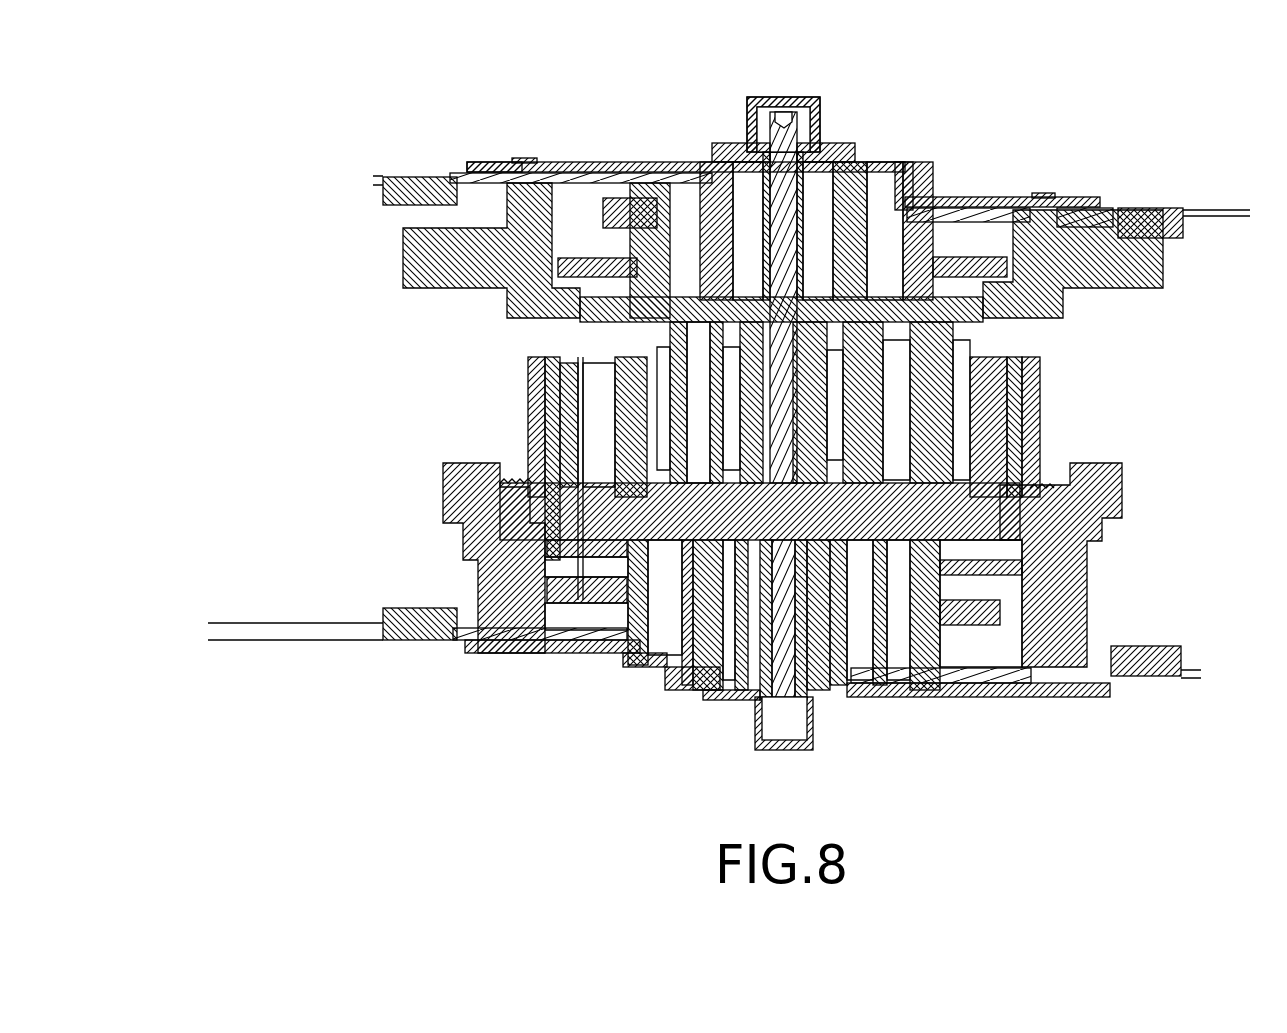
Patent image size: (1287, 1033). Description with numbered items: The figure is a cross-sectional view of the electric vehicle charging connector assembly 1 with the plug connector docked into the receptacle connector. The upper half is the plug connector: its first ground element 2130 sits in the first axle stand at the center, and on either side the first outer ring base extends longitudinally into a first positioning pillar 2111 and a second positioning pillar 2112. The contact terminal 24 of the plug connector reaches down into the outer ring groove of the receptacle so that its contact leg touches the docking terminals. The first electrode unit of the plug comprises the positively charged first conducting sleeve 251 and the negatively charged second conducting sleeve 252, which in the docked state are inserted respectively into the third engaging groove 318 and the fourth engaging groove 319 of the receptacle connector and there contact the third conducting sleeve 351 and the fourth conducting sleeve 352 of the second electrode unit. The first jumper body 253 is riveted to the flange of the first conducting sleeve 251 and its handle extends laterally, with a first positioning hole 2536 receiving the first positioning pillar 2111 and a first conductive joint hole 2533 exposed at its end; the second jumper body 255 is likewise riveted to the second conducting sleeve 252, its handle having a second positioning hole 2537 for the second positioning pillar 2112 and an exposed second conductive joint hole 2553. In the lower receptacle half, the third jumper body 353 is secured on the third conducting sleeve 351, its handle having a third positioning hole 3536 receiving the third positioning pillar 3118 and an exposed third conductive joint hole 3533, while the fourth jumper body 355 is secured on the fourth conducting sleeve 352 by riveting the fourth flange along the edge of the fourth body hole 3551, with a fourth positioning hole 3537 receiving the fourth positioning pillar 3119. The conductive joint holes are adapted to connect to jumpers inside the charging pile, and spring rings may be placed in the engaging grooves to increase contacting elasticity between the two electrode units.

The electric vehicle charging connector assembly 1 is at (250, 91).
The contact terminal 24 is at (603, 317).
The first conducting sleeve 251 is at (653, 237).
The second conducting sleeve 252 is at (722, 183).
The first jumper body 253 is at (1083, 218).
The second jumper body 255 is at (485, 166).
The third engaging groove 318 is at (637, 407).
The fourth engaging groove 319 is at (710, 437).
The third conducting sleeve 351 is at (630, 650).
The fourth conducting sleeve 352 is at (712, 655).
The third jumper body 353 is at (607, 637).
The fourth jumper body 355 is at (990, 692).
The first positioning pillar 2111 is at (1111, 300).
The second positioning pillar 2112 is at (523, 180).
The first ground element 2130 is at (783, 152).
The first conductive joint hole 2533 is at (1147, 210).
The first positioning hole 2536 is at (1057, 195).
The second positioning hole 2537 is at (512, 158).
The second conductive joint hole 2553 is at (435, 185).
The third positioning pillar 3118 is at (480, 593).
The fourth positioning pillar 3119 is at (1085, 626).
The third conductive joint hole 3533 is at (417, 620).
The third positioning hole 3536 is at (512, 640).
The fourth positioning hole 3537 is at (1056, 681).
The fourth body hole 3551 is at (1148, 667).